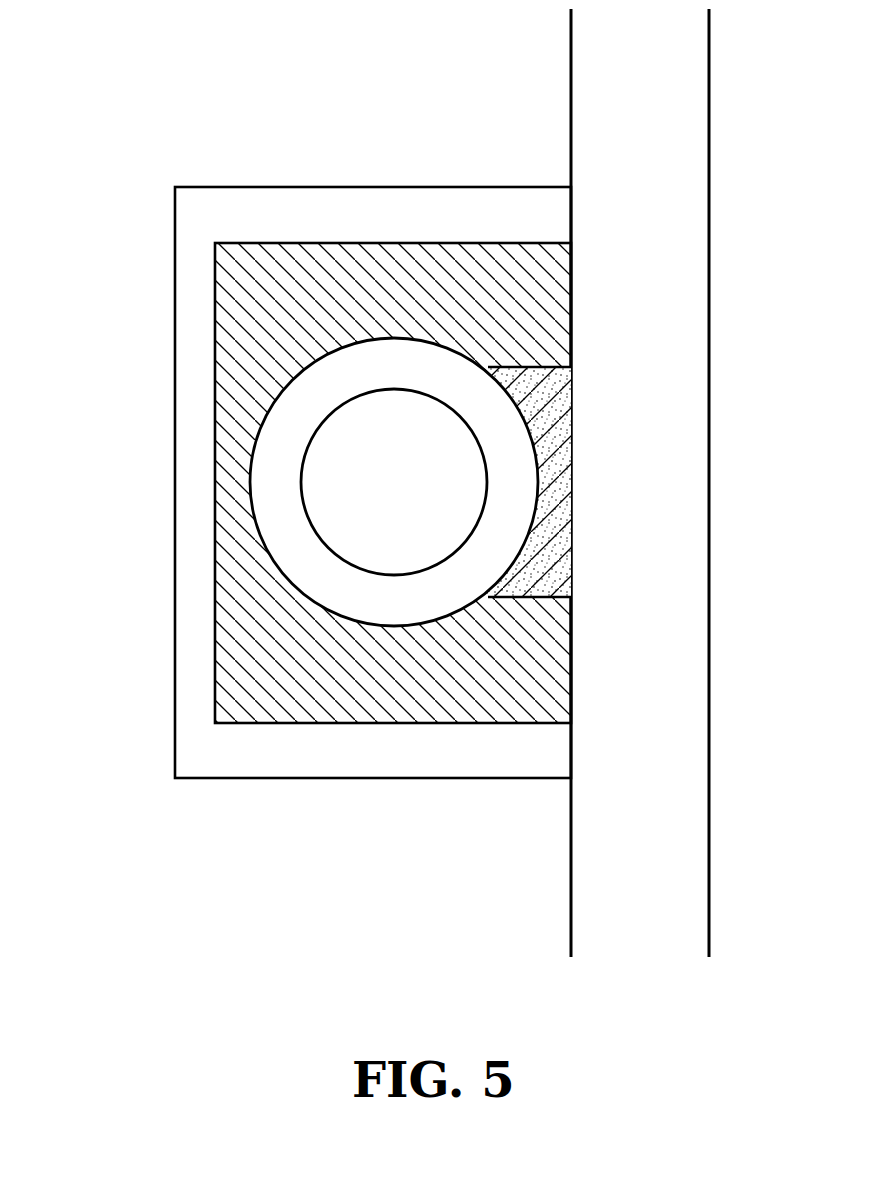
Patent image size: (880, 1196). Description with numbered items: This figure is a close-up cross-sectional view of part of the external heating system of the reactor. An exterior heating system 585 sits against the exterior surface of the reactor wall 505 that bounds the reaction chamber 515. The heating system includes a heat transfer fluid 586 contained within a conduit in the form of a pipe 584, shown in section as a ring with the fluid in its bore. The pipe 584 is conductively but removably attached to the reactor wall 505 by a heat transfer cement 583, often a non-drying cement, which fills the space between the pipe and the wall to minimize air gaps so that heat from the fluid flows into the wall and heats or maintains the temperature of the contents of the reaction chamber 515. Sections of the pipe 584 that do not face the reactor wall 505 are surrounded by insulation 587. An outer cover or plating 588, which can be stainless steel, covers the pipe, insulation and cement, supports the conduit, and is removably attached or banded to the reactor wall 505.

The reactor wall 505 is at (570, 82).
The reaction chamber 515 is at (677, 864).
The heat transfer cement 583 is at (548, 420).
The pipe 584 is at (432, 593).
The exterior heating system 585 is at (146, 146).
The heat transfer fluid 586 is at (387, 495).
The insulation 587 is at (345, 282).
The outer cover or plating 588 is at (190, 412).